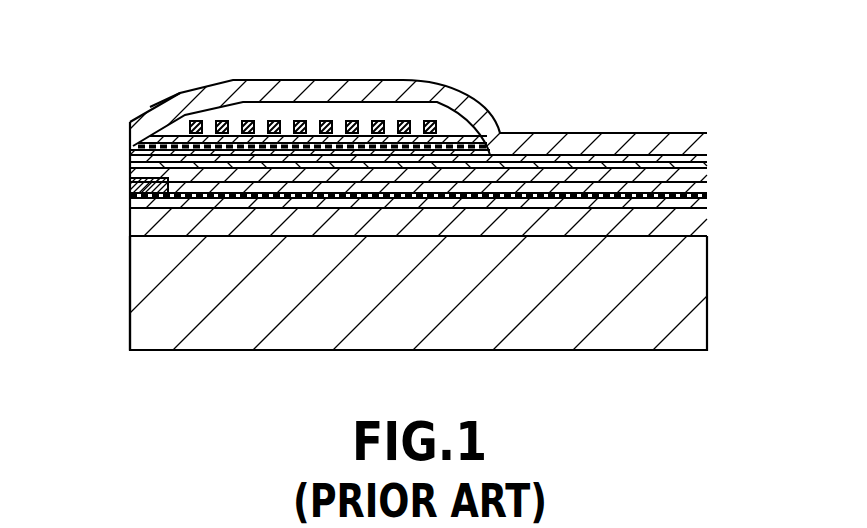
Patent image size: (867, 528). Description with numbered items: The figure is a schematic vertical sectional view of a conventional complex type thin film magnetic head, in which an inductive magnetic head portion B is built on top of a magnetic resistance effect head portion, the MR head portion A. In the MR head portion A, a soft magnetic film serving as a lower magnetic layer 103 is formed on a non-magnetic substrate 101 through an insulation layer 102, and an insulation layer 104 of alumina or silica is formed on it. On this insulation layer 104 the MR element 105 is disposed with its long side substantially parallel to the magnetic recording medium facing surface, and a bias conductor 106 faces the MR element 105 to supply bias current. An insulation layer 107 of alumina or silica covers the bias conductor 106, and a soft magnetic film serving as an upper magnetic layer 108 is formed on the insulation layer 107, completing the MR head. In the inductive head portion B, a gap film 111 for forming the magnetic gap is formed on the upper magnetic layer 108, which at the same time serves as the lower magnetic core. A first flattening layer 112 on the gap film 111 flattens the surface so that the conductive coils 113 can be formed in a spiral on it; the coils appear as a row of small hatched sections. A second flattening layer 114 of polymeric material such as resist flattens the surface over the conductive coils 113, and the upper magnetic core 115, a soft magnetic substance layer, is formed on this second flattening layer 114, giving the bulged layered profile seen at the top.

The non-magnetic substrate 101 is at (687, 280).
The insulation layer 102 is at (140, 225).
The lower magnetic layer 103 is at (274, 204).
The insulation layer 104 is at (379, 198).
The MR element 105 is at (135, 186).
The bias conductor 106 is at (128, 175).
The insulation layer 107 is at (514, 176).
The upper magnetic layer 108 is at (150, 107).
The gap film 111 is at (258, 143).
The first flattening layer 112 is at (203, 121).
The conductive coil 113 is at (437, 103).
The second flattening layer 114 is at (367, 112).
The upper magnetic core 115 is at (312, 93).
The MR head portion A is at (590, 352).
The inductive head portion B is at (684, 114).